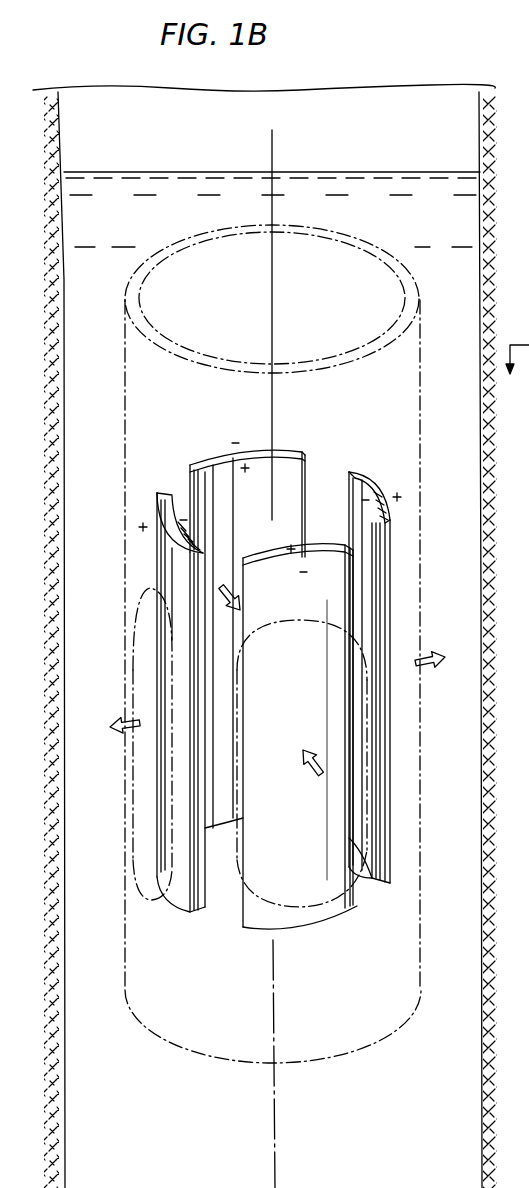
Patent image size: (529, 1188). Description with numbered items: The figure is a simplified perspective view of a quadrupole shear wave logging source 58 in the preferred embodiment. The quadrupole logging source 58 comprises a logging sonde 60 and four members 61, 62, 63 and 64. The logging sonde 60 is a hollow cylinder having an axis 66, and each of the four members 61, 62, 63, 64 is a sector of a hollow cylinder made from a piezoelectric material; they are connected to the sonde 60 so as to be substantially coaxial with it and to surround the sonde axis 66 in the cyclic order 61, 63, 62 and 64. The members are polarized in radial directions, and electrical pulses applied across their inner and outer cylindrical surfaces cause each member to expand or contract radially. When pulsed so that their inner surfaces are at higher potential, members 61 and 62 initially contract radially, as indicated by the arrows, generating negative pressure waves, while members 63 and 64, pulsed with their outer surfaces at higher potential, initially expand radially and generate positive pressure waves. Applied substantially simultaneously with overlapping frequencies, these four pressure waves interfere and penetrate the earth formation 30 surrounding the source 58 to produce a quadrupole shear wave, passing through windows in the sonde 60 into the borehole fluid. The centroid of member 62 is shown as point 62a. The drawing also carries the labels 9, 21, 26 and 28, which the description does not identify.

The section line indicator 9 is at (517, 373).
The borehole 21 is at (286, 640).
The borehole fluid 26 is at (418, 226).
The formation 28 is at (416, 154).
The earth formation 30 is at (486, 138).
The quadrupole logging source 58 is at (118, 437).
The logging sonde 60 is at (415, 298).
The member 61 is at (283, 452).
The member 62 is at (327, 912).
The centroid 62a is at (305, 742).
The member 63 is at (155, 517).
The member 64 is at (372, 477).
The sonde axis 66 is at (273, 158).